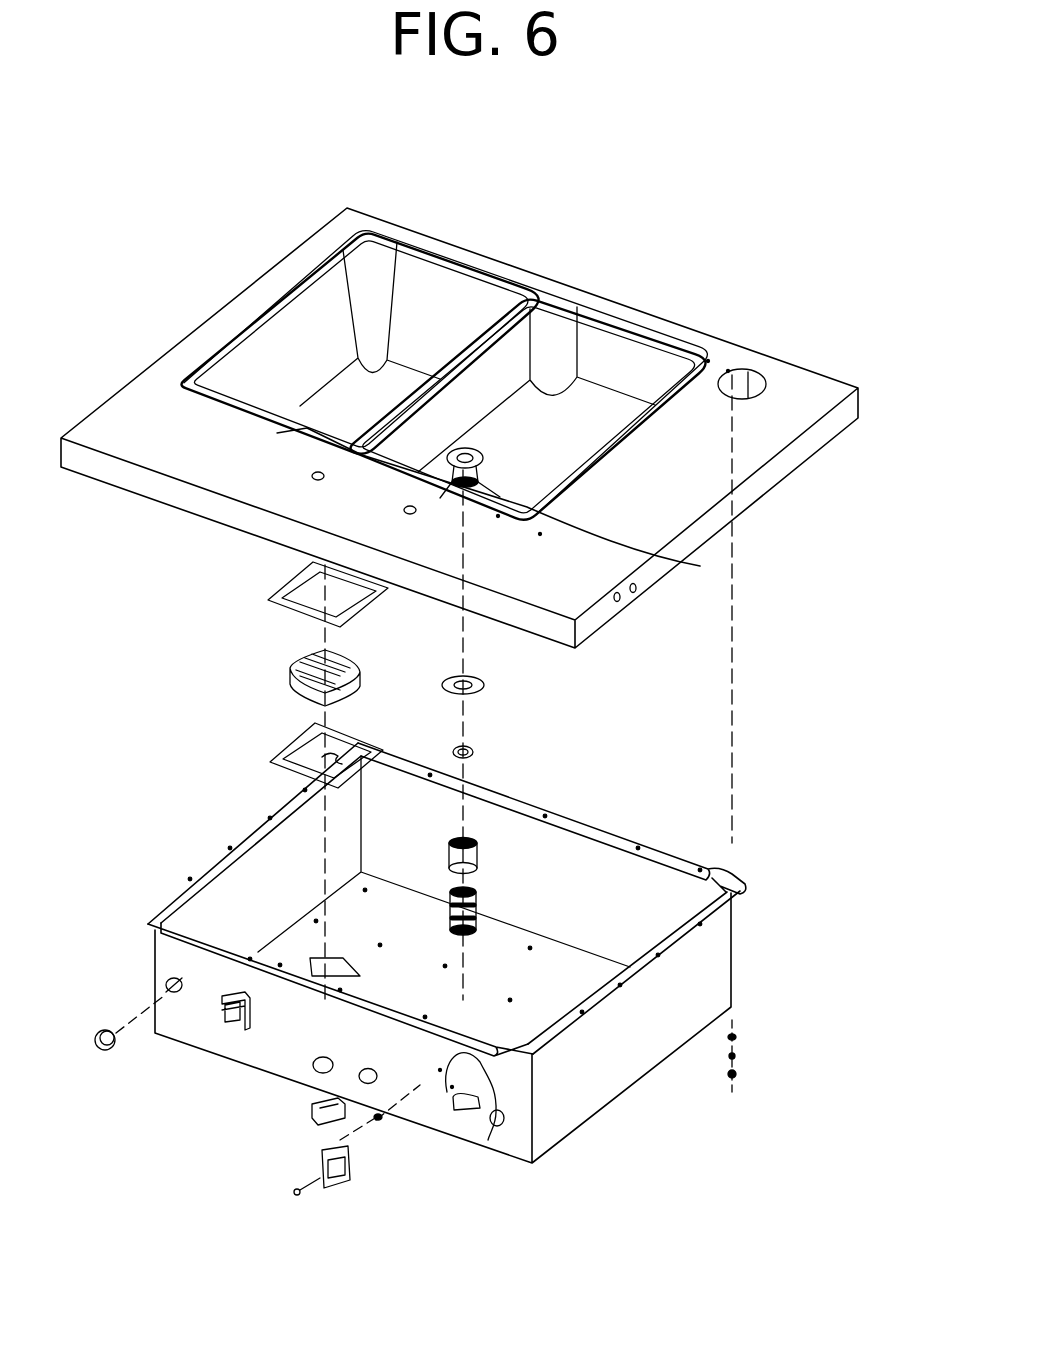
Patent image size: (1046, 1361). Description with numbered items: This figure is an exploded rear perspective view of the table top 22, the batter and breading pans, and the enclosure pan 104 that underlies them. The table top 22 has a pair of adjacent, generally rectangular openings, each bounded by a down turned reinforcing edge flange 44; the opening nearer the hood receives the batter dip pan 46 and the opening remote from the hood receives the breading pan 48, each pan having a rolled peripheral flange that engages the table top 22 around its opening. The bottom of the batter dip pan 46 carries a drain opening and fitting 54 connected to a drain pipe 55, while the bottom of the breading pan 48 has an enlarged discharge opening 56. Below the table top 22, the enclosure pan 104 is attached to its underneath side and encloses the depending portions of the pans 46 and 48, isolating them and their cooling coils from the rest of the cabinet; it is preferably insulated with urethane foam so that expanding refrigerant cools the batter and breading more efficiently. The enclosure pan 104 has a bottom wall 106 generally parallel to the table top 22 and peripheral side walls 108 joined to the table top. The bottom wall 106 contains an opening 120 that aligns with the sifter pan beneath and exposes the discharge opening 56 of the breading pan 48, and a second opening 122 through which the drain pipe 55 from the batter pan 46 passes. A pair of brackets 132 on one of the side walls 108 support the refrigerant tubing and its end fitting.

The table top 22 is at (783, 430).
The down turned reinforcing edge flange 44 is at (767, 487).
The batter dip pan 46 is at (635, 352).
The breading pan 48 is at (435, 295).
The drain opening and fitting 54 is at (700, 566).
The drain pipe 55 is at (478, 858).
The enlarged discharge opening 56 is at (277, 433).
The enclosure pan 104 is at (524, 999).
The bottom wall 106 is at (553, 960).
The peripheral side walls 108 is at (658, 1035).
The opening 120 is at (312, 955).
The opening 122 is at (468, 1125).
The brackets 132 is at (238, 1020).